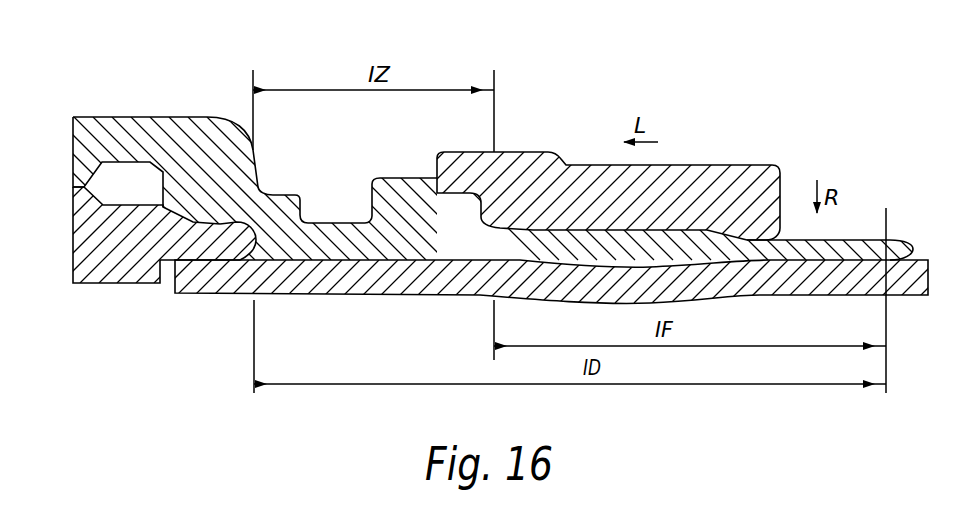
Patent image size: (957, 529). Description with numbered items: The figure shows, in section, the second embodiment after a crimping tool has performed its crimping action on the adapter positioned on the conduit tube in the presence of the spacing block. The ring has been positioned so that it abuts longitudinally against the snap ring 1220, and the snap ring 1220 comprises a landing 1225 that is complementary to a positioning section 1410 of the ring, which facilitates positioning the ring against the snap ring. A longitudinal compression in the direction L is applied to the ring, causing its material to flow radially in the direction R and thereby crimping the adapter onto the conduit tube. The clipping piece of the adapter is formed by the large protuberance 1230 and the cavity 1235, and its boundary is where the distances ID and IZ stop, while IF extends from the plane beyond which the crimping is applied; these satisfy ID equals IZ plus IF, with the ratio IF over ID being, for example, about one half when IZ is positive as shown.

The snap ring 1220 is at (415, 180).
The landing 1225 is at (457, 207).
The large protuberance 1230 is at (193, 204).
The cavity 1235 is at (238, 218).
The positioning section 1410 is at (482, 200).